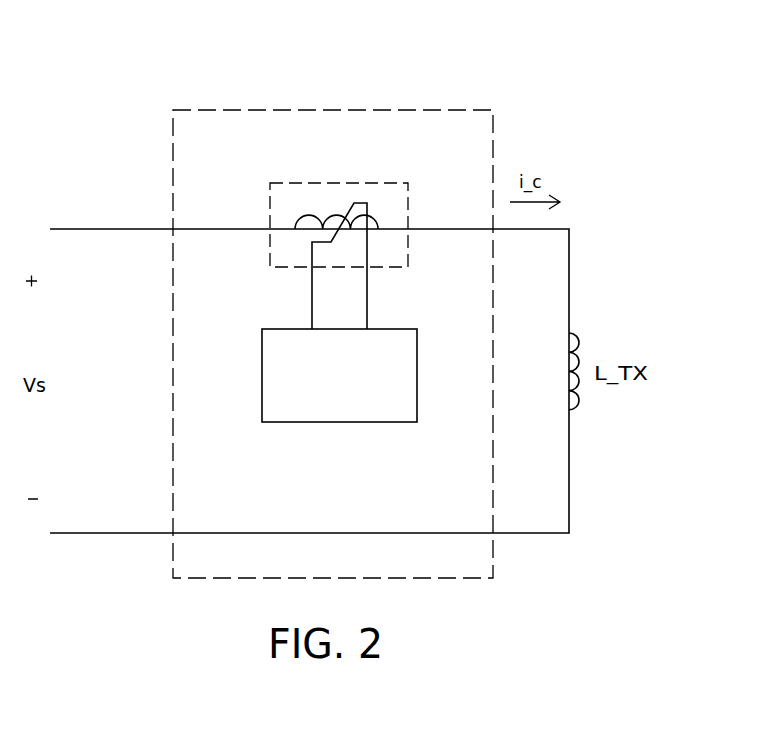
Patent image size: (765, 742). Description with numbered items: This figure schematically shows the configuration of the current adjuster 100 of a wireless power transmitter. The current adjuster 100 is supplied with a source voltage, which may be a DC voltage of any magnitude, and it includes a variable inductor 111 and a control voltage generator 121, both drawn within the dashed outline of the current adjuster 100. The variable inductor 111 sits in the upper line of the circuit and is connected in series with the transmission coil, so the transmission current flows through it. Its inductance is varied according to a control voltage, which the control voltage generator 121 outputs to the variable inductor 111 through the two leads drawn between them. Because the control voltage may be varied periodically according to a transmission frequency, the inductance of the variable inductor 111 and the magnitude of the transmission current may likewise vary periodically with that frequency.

The current adjuster 100 is at (442, 110).
The variable inductor 111 is at (390, 183).
The control voltage generator 121 is at (417, 372).